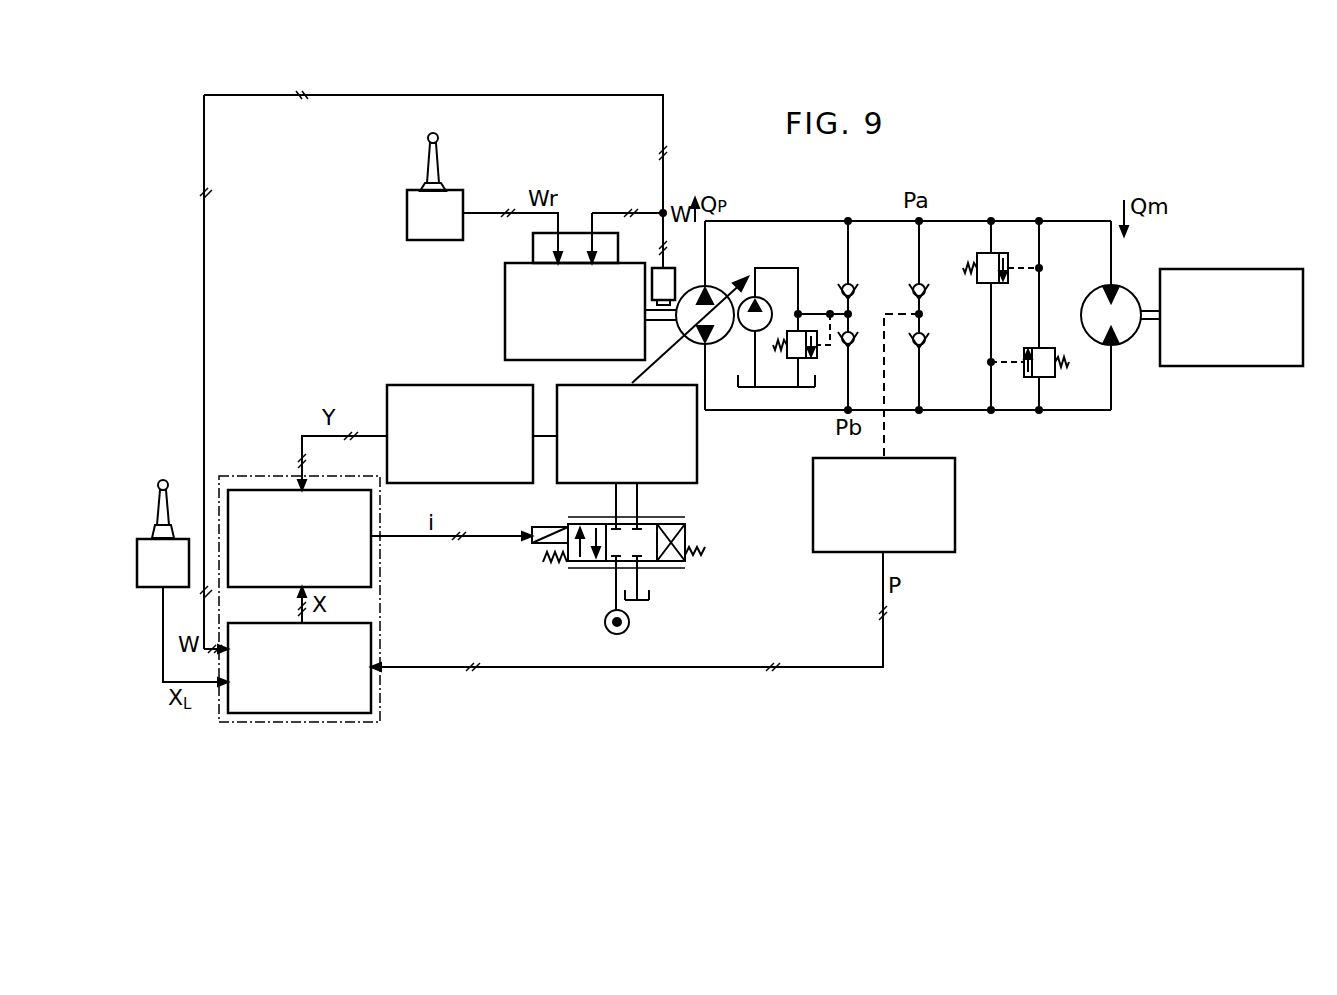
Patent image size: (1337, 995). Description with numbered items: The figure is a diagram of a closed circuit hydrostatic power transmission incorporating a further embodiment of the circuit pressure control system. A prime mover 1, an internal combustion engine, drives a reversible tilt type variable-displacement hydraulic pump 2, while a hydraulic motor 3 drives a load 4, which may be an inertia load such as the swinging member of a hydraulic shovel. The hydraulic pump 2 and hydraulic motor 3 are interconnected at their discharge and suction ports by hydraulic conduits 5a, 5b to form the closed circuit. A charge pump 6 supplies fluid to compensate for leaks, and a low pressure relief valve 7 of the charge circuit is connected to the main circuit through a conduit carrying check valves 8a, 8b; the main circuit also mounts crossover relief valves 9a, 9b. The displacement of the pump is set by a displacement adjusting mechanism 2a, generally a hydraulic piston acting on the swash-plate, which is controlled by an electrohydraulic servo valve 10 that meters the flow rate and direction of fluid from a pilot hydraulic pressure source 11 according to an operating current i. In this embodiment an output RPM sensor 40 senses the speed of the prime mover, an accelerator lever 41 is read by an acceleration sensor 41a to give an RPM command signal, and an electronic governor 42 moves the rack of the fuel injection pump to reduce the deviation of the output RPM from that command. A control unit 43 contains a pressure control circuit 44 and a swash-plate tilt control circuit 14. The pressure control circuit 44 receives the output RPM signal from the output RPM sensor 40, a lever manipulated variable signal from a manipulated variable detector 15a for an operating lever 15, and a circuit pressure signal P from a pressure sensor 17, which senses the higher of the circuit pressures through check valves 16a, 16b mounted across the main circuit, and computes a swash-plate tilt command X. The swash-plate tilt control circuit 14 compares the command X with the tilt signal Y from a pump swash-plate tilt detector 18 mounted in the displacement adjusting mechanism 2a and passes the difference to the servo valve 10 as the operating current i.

The prime mover 1 is at (505, 297).
The variable-displacement hydraulic pump 2 is at (715, 293).
The displacement adjusting mechanism 2a is at (697, 446).
The hydraulic motor 3 is at (1122, 346).
The load 4 is at (1258, 269).
The hydraulic conduit 5a is at (943, 221).
The hydraulic conduit 5b is at (944, 410).
The charge pump 6 is at (778, 290).
The low pressure relief valve 7 is at (788, 358).
The check valve 8a is at (842, 287).
The check valve 8b is at (854, 343).
The crossover relief valve 9a is at (977, 290).
The crossover relief valve 9b is at (1028, 348).
The servo valve 10 is at (689, 528).
The pilot hydraulic pressure source 11 is at (603, 623).
The swash-plate tilt control circuit 14 is at (371, 503).
The operating lever 15 is at (157, 507).
The manipulated variable detector 15a is at (148, 590).
The check valve 16a is at (912, 293).
The check valve 16b is at (925, 339).
The pressure sensor 17 is at (955, 480).
The pump swash-plate tilt detector 18 is at (450, 385).
The output RPM sensor 40 is at (680, 282).
The accelerator lever 41 is at (440, 173).
The acceleration sensor 41a is at (463, 201).
The electronic governor 42 is at (581, 233).
The control unit 43 is at (383, 711).
The pressure control circuit 44 is at (279, 623).